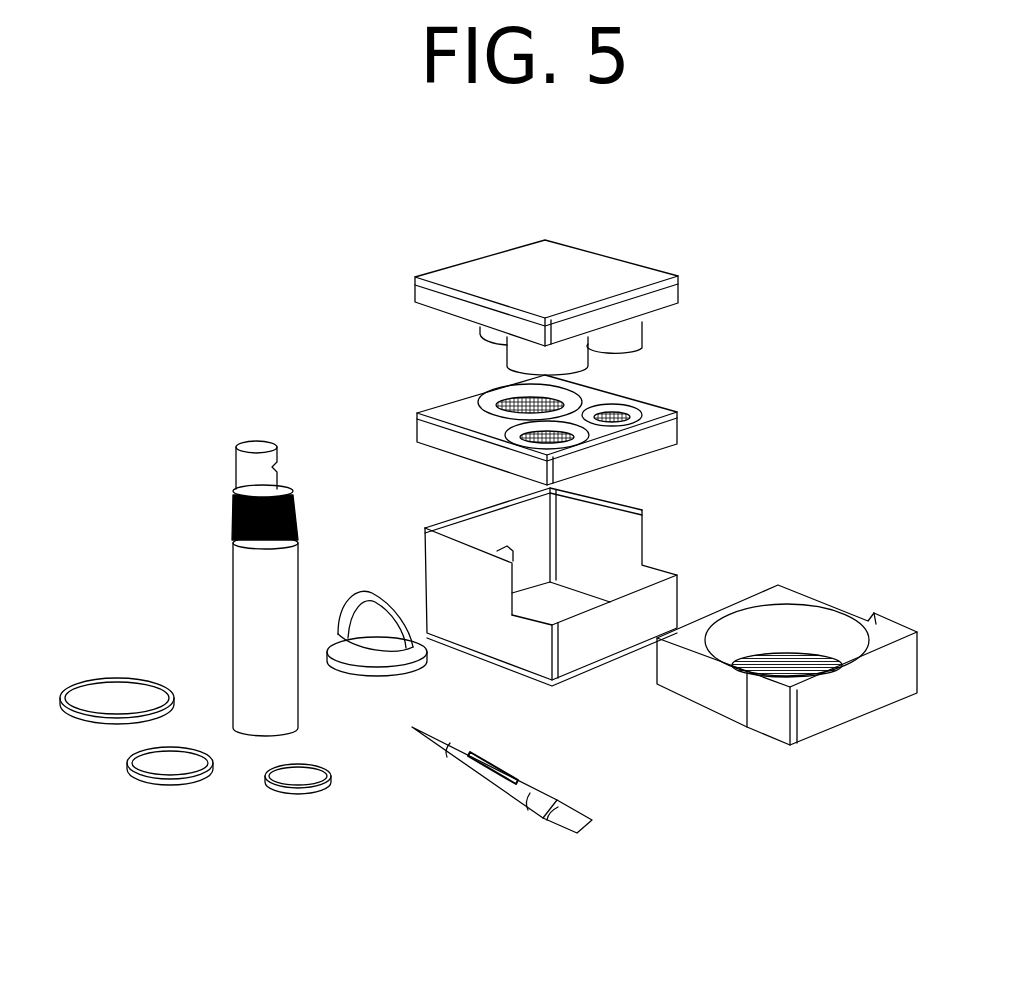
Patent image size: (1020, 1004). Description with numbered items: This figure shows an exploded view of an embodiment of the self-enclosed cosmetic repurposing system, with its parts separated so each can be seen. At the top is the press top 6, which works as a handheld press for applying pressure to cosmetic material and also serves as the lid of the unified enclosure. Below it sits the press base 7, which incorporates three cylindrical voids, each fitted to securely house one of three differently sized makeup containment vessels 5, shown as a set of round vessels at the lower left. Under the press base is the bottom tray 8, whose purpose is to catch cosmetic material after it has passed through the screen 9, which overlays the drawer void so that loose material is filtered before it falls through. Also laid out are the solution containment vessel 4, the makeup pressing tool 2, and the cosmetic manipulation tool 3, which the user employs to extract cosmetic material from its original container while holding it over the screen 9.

The makeup pressing tool 2 is at (370, 682).
The cosmetic manipulation tool 3 is at (485, 787).
The solution containment vessel 4 is at (225, 553).
The makeup containment vessels 5 is at (97, 737).
The press top 6 is at (642, 258).
The press base 7 is at (682, 417).
The bottom tray 8 is at (647, 535).
The screen 9 is at (792, 668).